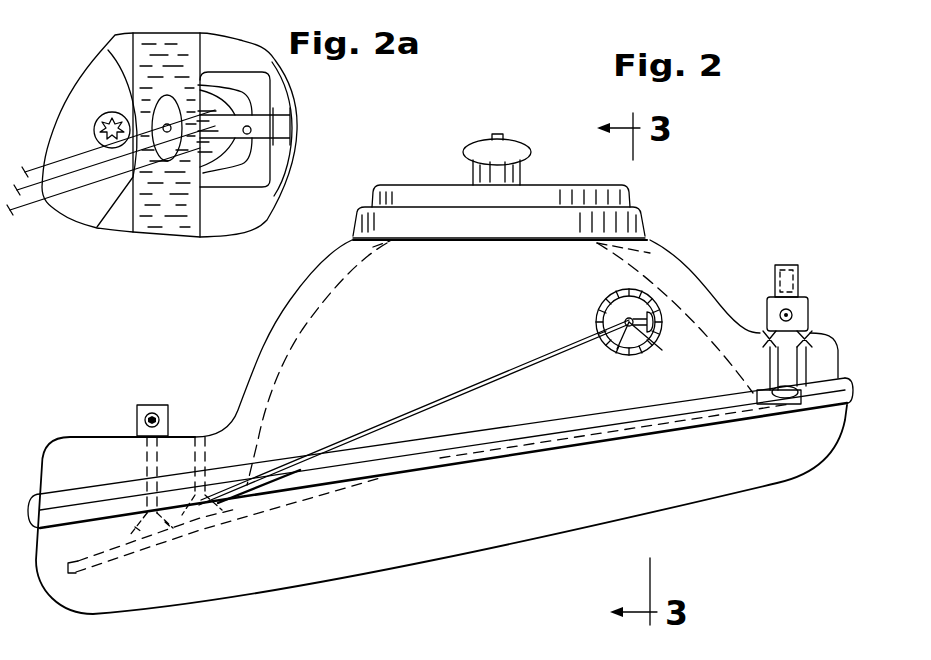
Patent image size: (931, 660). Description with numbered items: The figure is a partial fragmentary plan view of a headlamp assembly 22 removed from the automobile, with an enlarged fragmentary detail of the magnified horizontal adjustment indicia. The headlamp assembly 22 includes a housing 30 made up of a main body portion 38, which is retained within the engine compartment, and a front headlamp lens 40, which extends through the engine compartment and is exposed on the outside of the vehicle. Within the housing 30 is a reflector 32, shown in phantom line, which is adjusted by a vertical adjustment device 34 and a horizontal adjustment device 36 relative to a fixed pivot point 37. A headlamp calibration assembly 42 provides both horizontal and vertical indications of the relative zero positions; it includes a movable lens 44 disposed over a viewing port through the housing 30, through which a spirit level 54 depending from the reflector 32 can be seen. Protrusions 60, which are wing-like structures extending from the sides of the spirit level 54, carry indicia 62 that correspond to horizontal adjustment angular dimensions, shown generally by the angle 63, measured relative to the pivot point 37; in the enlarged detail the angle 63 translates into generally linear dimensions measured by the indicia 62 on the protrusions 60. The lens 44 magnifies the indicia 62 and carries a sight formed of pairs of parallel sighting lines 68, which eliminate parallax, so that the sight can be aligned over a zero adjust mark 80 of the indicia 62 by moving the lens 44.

In FIG. 2, the headlamp assembly 22 is at (728, 200).
In FIG. 2, the housing 30 is at (858, 368).
In FIG. 2, the reflector 32 is at (272, 360).
In FIG. 2, the vertical adjustment device 34 is at (128, 416).
In FIG. 2, the horizontal adjustment device 36 is at (805, 288).
In FIG. 2, the fixed pivot point 37 is at (212, 492).
In FIG. 2, the main body portion 38 is at (703, 272).
In FIG. 2, the front headlamp lens 40 is at (827, 455).
In FIG. 2, the headlamp calibration assembly 42 is at (675, 365).
In FIG. 2, the movable lens 44 is at (629, 322).
In FIG. 2A, the spirit level 54 is at (157, 57).
In FIG. 2A, the protrusions 60 is at (238, 188).
In FIG. 2A, the indicia 62 is at (270, 173).
In FIG. 2A, the angle 63 is at (17, 135).
In FIG. 2, the angle 63 is at (563, 315).
In FIG. 2A, the sighting lines 68 is at (270, 148).
In FIG. 2A, the zero adjust mark 80 is at (277, 112).